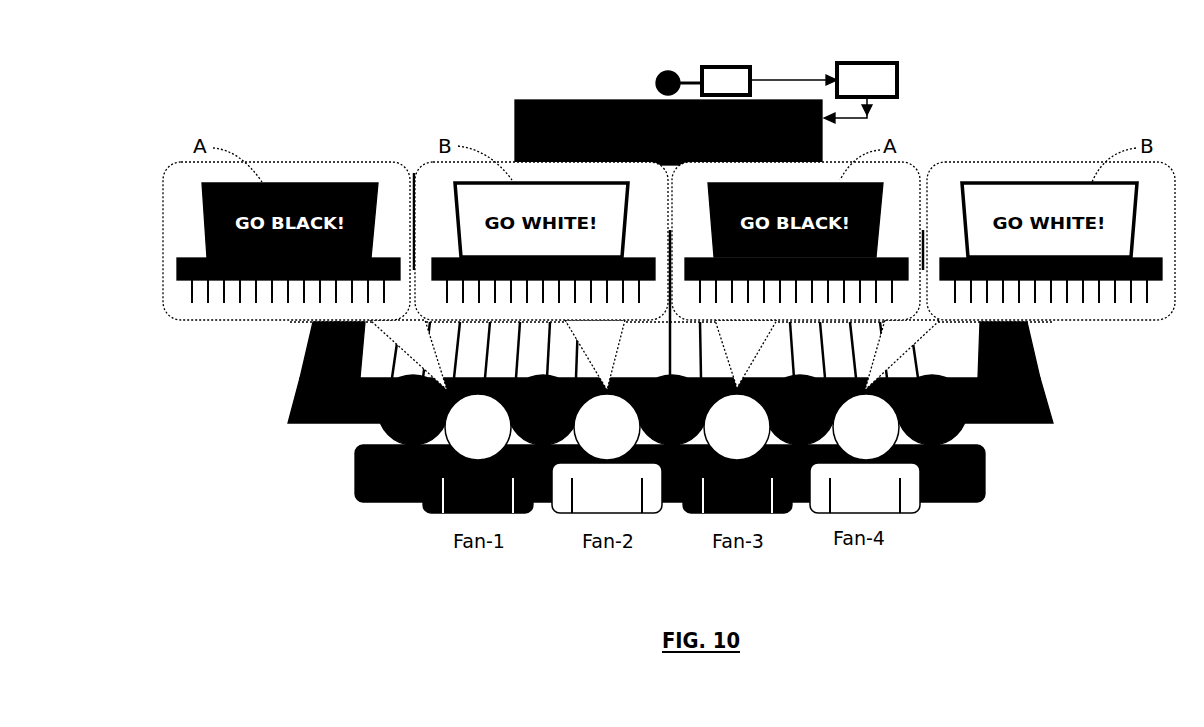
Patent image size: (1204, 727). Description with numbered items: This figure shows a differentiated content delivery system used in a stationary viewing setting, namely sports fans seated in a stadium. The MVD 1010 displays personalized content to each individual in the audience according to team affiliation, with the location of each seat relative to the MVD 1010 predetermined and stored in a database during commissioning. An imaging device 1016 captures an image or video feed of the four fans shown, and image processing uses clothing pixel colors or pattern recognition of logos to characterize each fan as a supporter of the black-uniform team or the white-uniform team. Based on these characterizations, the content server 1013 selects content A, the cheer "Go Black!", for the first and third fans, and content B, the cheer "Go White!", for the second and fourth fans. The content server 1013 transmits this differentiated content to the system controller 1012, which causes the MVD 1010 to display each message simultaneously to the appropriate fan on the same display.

The MVD 1010 is at (516, 100).
The system controller 1012 is at (898, 80).
The content server 1013 is at (752, 70).
The imaging device 1016 is at (660, 76).